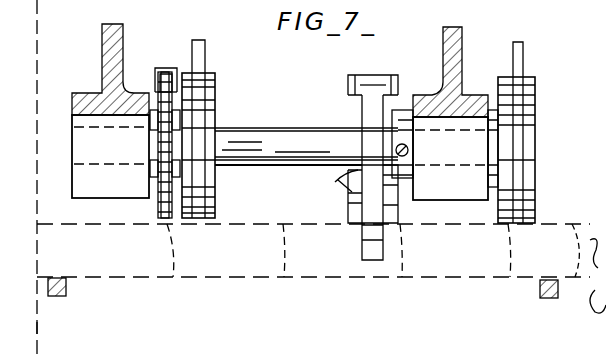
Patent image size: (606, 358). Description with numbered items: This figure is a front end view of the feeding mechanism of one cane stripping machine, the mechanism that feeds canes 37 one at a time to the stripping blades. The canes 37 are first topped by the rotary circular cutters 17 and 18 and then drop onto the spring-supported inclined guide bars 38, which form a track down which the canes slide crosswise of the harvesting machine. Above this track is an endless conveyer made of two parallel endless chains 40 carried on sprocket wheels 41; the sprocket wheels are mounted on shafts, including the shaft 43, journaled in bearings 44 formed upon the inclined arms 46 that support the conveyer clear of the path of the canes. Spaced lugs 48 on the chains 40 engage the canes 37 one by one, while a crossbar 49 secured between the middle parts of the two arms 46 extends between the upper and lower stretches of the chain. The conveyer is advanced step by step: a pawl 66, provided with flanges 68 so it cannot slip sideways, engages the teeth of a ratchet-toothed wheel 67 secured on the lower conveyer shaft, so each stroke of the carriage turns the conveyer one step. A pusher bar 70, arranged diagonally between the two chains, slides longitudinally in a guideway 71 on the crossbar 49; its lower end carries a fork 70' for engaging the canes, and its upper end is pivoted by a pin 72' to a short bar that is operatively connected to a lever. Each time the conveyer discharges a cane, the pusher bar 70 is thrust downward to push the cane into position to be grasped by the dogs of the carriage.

The rotary circular cutter 17 is at (40, 58).
The rotary circular cutter 18 is at (40, 327).
The cane 37 is at (247, 267).
The inclined guide bar 38 is at (67, 294).
The endless chain 40 is at (213, 110).
The sprocket wheel 41 is at (533, 117).
The shaft 43 is at (283, 145).
The bearing 44 is at (117, 186).
The arm 46 is at (124, 36).
The lug 48 is at (205, 58).
The crossbar 49 is at (283, 178).
The pawl 66 is at (167, 67).
The ratchet-toothed wheel 67 is at (167, 220).
The flange 68 is at (155, 95).
The pusher bar 70 is at (351, 217).
The fork 70' is at (371, 212).
The guideway 71 is at (332, 195).
The pin 72' is at (345, 70).